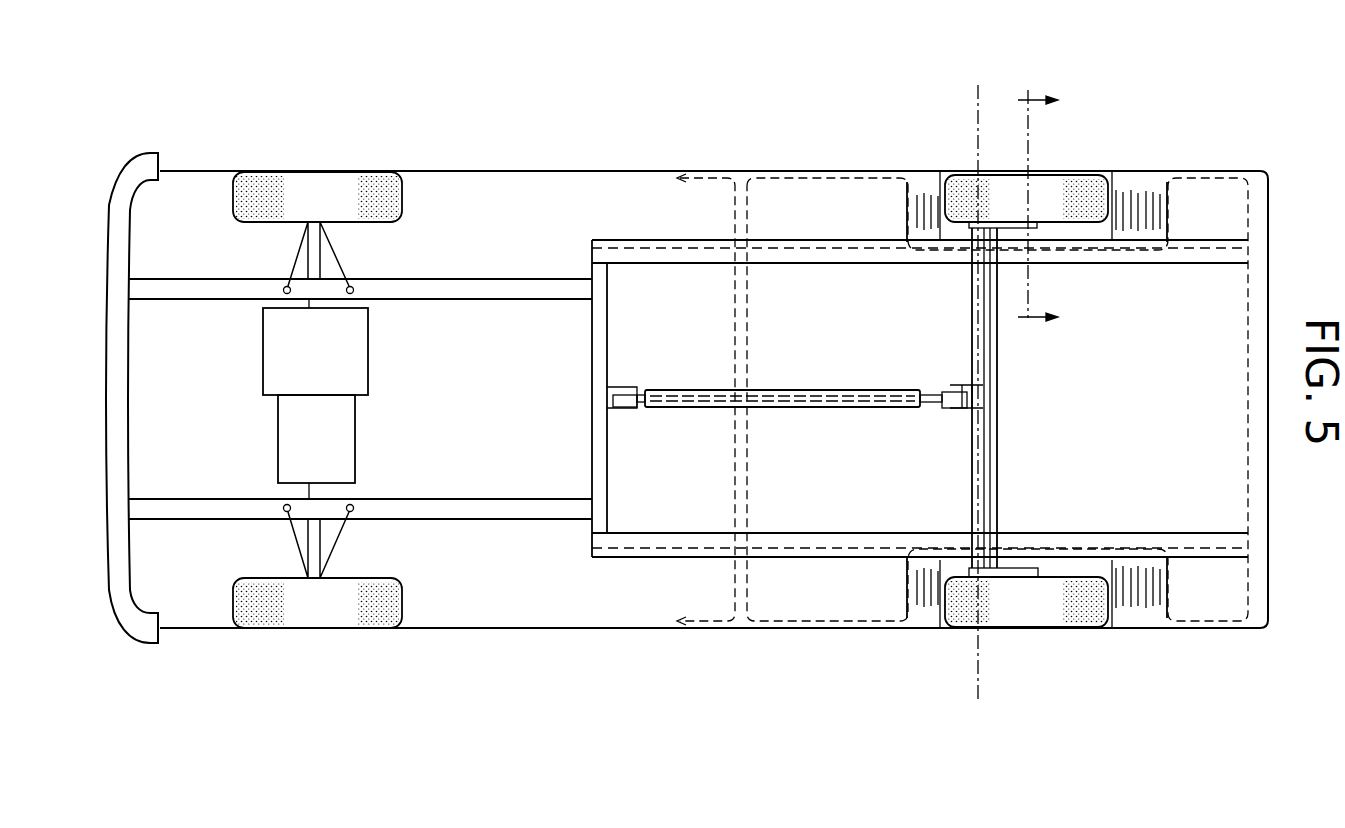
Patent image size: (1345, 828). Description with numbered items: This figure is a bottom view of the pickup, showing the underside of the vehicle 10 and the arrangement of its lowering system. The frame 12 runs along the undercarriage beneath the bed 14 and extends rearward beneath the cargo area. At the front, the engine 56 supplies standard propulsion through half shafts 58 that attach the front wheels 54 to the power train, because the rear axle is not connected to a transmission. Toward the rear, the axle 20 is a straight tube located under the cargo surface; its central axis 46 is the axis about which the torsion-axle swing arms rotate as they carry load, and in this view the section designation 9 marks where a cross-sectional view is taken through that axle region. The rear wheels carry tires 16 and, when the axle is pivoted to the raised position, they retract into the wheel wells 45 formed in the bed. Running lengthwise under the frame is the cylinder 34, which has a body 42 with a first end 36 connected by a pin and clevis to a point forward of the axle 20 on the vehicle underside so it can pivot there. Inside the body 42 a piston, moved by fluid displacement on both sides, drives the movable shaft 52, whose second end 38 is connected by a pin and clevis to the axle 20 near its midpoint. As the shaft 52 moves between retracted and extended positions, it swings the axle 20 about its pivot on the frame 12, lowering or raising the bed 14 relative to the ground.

The section line 9- 9 is at (1049, 209).
The vehicle 10 is at (653, 114).
The frame 12 is at (827, 262).
The bed 14 is at (848, 160).
The tires 16 is at (1047, 184).
The axle 20 is at (983, 497).
The cylinder 34 is at (795, 409).
The first end 36 is at (641, 420).
The second end 38 is at (949, 417).
The body 42 is at (850, 388).
The wheel wells 45 is at (1142, 187).
The central axis 46 is at (975, 662).
The movable shaft 52 is at (948, 387).
The front wheels 54 is at (334, 156).
The engine 56 is at (331, 369).
The half shafts 58 is at (320, 256).